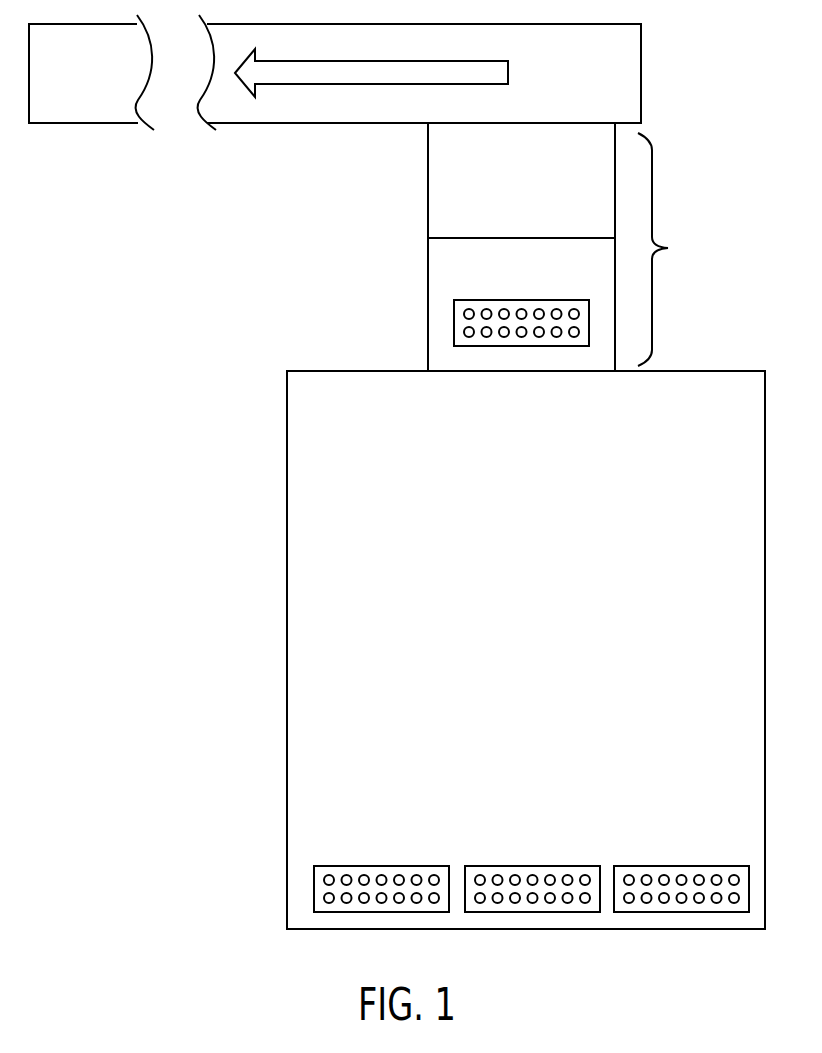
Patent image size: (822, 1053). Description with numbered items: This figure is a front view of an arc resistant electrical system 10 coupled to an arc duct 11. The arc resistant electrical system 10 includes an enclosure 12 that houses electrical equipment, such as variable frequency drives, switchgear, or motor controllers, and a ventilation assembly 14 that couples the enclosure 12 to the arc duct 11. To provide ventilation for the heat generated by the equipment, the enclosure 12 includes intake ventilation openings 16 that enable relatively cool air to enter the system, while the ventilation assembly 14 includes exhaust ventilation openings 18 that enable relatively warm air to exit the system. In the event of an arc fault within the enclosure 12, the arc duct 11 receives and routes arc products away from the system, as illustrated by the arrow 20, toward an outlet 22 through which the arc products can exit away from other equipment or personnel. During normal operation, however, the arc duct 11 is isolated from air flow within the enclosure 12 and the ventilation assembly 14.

The arc resistant electrical system 10 is at (341, 271).
The arc duct 11 is at (642, 73).
The enclosure 12 is at (287, 478).
The ventilation assembly 14 is at (564, 247).
The intake ventilation openings 16 is at (498, 866).
The exhaust ventilation openings 18 is at (521, 300).
The arrow 20 is at (508, 72).
The outlet 22 is at (97, 85).